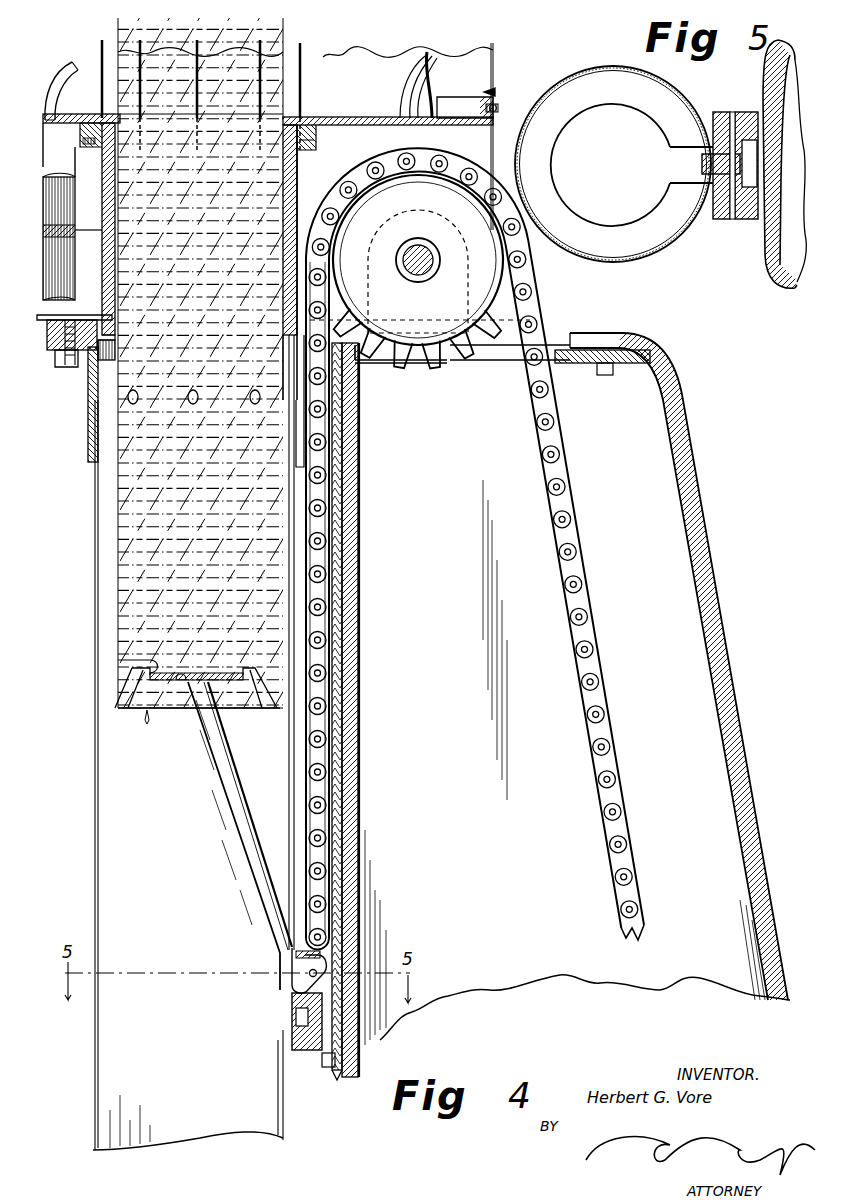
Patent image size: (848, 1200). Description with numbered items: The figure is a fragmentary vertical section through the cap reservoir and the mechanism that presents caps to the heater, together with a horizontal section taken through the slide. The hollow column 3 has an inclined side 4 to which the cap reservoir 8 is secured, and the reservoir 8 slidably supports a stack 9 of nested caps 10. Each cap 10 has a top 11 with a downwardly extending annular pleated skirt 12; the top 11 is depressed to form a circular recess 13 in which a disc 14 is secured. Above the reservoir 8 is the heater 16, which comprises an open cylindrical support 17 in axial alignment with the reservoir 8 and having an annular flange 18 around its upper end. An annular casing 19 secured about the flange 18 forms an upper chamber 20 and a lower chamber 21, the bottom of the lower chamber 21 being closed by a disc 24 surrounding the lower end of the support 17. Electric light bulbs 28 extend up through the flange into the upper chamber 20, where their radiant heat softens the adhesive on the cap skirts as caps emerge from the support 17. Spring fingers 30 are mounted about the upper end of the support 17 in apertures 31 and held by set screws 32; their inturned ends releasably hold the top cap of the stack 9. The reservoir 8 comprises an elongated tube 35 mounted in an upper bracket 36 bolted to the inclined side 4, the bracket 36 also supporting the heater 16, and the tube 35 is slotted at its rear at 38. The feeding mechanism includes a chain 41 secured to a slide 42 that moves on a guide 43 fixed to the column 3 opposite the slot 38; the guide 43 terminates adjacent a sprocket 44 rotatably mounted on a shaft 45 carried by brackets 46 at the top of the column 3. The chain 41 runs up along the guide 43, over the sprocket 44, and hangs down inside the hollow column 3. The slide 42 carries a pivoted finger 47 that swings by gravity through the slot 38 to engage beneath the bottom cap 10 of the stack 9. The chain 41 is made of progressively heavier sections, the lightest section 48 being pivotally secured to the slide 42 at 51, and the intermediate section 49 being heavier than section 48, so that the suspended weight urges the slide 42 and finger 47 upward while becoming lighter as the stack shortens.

In FIG. 4, the hollow column 3 is at (350, 845).
In FIG. 5, the hollow column 3 is at (770, 283).
In FIG. 4, the inclined side 4 is at (732, 645).
In FIG. 4, the cap reservoir 8 is at (95, 572).
In FIG. 5, the cap reservoir 8 is at (605, 68).
In FIG. 4, the stack of nested caps 9 is at (118, 510).
In FIG. 4, the cap 10 is at (147, 724).
In FIG. 4, the top 11 is at (270, 708).
In FIG. 4, the annular pleated skirt 12 is at (120, 690).
In FIG. 4, the circular recess 13 is at (118, 660).
In FIG. 4, the disc 14 is at (182, 682).
In FIG. 4, the heater 16 is at (495, 90).
In FIG. 4, the cylindrical support 17 is at (102, 175).
In FIG. 4, the annular flange 18 is at (452, 100).
In FIG. 4, the annular casing 19 is at (503, 112).
In FIG. 4, the upper chamber 20 is at (494, 84).
In FIG. 4, the lower chamber 21 is at (73, 236).
In FIG. 4, the disc 24 is at (45, 345).
In FIG. 4, the electric light bulb 28 is at (85, 82).
In FIG. 4, the spring finger 30 is at (128, 56).
In FIG. 4, the aperture 31 is at (305, 114).
In FIG. 4, the set screw 32 is at (82, 142).
In FIG. 4, the elongated tube 35 is at (105, 1152).
In FIG. 4, the upper bracket 36 is at (88, 430).
In FIG. 4, the slot 38 is at (268, 845).
In FIG. 5, the slot 38 is at (703, 178).
In FIG. 4, the chain 41 is at (360, 647).
In FIG. 4, the slide 42 is at (290, 1052).
In FIG. 5, the slide 42 is at (722, 222).
In FIG. 4, the guide 43 is at (332, 1068).
In FIG. 5, the guide 43 is at (760, 148).
In FIG. 4, the sprocket 44 is at (455, 370).
In FIG. 4, the shaft 45 is at (418, 238).
In FIG. 4, the bracket 46 is at (466, 284).
In FIG. 4, the pivoted finger 47 is at (220, 808).
In FIG. 5, the pivoted finger 47 is at (705, 148).
In FIG. 4, the chain section 48 is at (568, 488).
In FIG. 4, the chain section 49 is at (642, 866).
In FIG. 4, the pivotal connection 51 is at (330, 937).